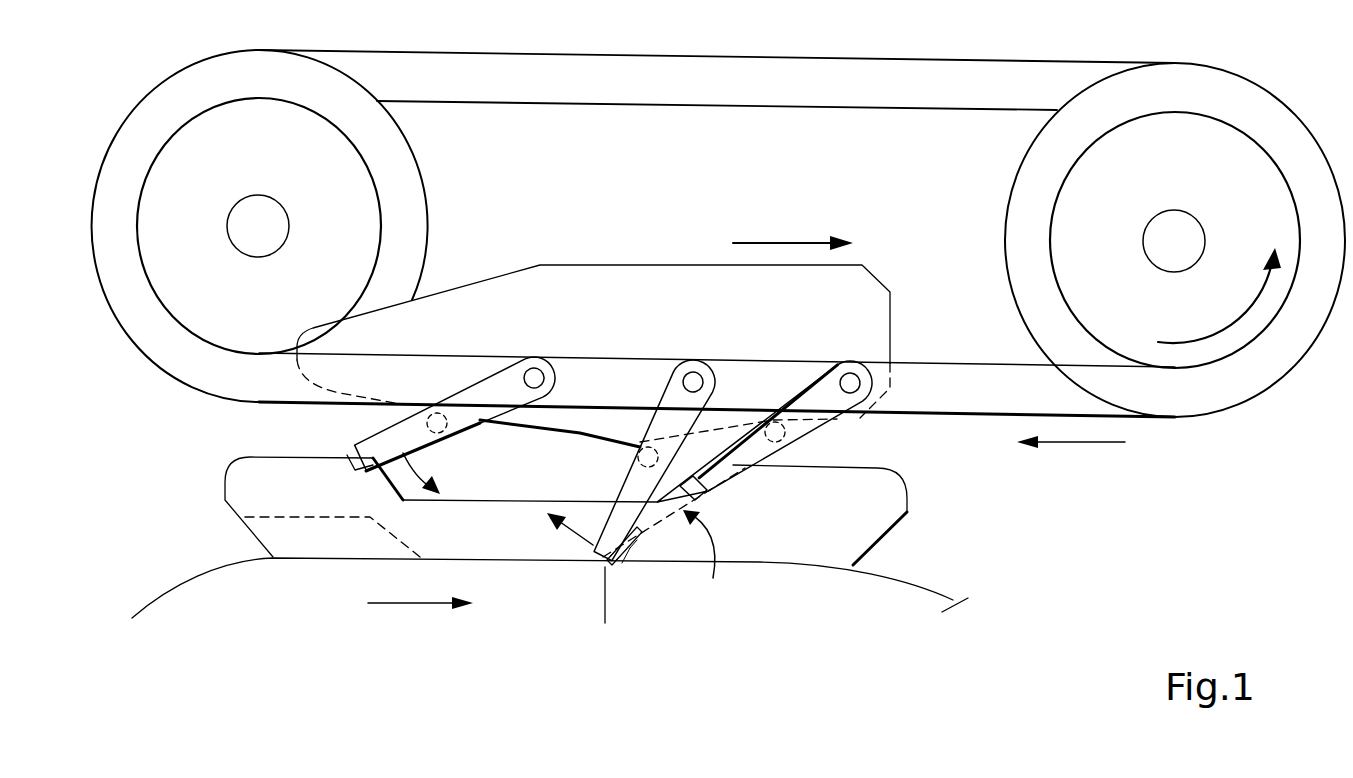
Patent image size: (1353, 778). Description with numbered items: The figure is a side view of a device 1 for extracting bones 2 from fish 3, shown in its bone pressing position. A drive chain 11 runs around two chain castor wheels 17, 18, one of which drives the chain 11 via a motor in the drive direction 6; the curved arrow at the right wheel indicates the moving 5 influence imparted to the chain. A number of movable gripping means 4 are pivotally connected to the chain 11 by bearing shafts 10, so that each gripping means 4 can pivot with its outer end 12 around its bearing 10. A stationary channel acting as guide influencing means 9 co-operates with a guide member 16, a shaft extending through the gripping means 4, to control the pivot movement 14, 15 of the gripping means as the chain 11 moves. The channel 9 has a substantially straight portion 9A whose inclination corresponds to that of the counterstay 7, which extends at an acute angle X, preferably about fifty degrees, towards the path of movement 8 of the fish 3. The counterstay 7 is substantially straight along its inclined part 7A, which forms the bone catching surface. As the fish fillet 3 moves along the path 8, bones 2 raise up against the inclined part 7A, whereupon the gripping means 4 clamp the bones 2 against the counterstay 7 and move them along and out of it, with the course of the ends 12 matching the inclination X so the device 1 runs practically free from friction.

The device 1 is at (1085, 445).
The bones 2 is at (605, 600).
The fish 3 is at (953, 600).
The gripping means 4 is at (632, 490).
The moving 5 is at (1232, 327).
The course 6 is at (788, 240).
The counterstay 7 is at (895, 512).
The inclined part 7A is at (700, 490).
The path of movement 8 is at (410, 605).
The guide influencing means 9 is at (582, 420).
The straight portion 9A is at (743, 425).
The bearing shafts 10 is at (862, 400).
The drive chain 11 is at (952, 375).
The end 12 is at (352, 456).
The pivot movement 14 is at (577, 537).
The pivot movement 15 is at (435, 472).
The guide member 16 is at (638, 458).
The chain castor wheel 17 is at (375, 213).
The chain castor wheel 18 is at (1065, 193).
The acute angle X is at (702, 560).